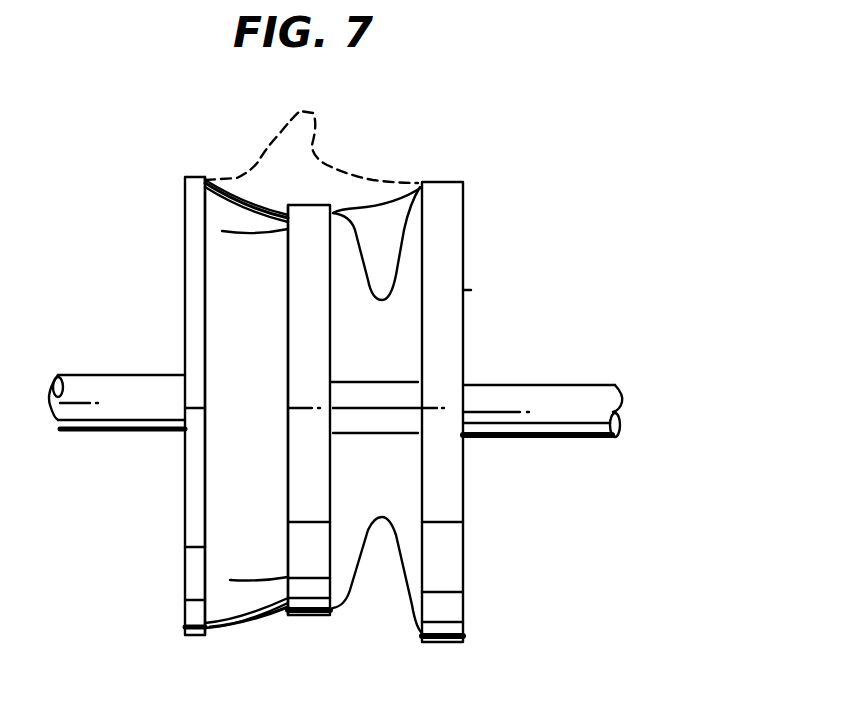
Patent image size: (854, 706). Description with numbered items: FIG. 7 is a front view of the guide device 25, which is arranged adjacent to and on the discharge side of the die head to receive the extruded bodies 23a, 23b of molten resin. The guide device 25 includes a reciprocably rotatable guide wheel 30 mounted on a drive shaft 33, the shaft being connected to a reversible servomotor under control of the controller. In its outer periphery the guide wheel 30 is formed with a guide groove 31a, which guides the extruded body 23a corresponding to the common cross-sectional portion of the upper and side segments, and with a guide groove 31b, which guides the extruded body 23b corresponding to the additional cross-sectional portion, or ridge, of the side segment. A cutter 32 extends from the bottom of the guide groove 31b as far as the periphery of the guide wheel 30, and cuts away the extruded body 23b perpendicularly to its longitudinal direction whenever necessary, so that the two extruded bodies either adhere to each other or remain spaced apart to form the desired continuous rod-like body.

The extruded body 23a is at (313, 143).
The extruded body 23b is at (380, 250).
The guide device 25 is at (500, 302).
The guide wheel 30 is at (463, 566).
The guide groove 31a is at (280, 613).
The guide groove 31b is at (382, 577).
The cutter 32 is at (398, 408).
The drive shaft 33 is at (600, 417).